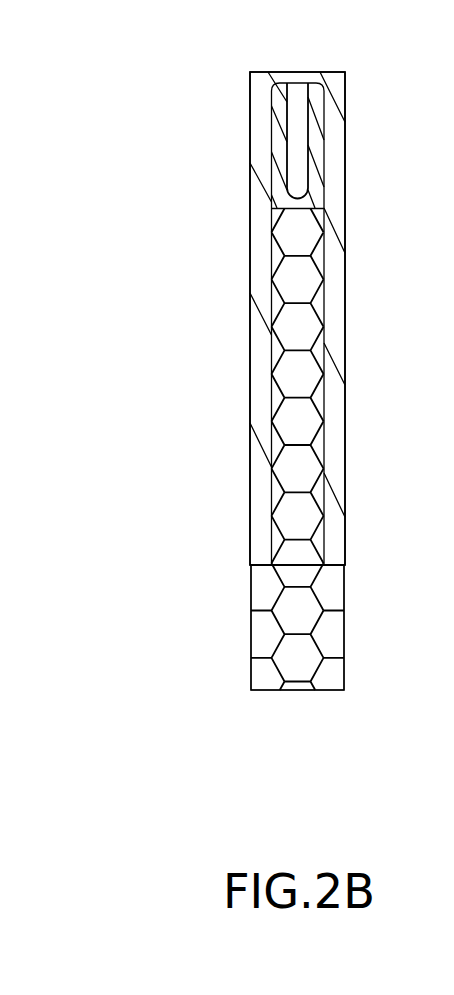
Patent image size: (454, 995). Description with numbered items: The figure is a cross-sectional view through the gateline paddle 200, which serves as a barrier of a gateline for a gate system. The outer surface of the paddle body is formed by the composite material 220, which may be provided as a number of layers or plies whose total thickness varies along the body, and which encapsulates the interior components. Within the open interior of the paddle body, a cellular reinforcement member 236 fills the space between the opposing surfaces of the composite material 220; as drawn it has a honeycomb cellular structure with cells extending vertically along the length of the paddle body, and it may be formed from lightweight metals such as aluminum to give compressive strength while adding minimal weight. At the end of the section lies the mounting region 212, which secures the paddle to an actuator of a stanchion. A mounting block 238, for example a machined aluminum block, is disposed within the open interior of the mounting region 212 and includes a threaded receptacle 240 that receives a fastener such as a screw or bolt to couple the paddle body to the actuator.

The gateline paddle 200 is at (122, 106).
The mounting region 212 is at (234, 99).
The composite material 220 is at (345, 340).
The cellular reinforcement member 236 is at (303, 452).
The mounting block 238 is at (322, 105).
The threaded receptacle 240 is at (296, 92).